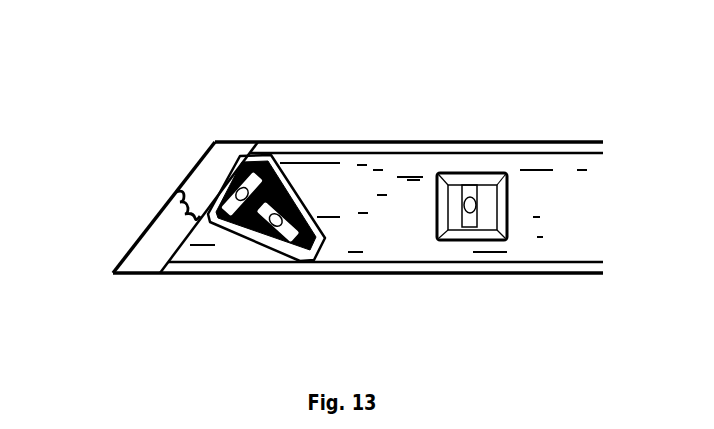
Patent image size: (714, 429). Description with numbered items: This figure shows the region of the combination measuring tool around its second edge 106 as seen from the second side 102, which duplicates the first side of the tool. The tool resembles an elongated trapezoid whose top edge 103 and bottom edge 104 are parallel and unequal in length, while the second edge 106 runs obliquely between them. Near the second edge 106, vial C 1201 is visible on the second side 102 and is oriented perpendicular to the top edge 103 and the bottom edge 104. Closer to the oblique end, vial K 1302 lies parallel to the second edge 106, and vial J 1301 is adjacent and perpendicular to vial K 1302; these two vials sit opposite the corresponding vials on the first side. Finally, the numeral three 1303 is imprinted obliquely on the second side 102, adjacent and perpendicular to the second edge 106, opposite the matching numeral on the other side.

The second side 102 is at (358, 256).
The top edge 103 is at (380, 135).
The bottom edge 104 is at (387, 275).
The second edge 106 is at (140, 212).
The vial C 1201 is at (472, 163).
The vial J 1301 is at (293, 182).
The vial K 1302 is at (234, 185).
The numeral "3" 1303 is at (167, 185).